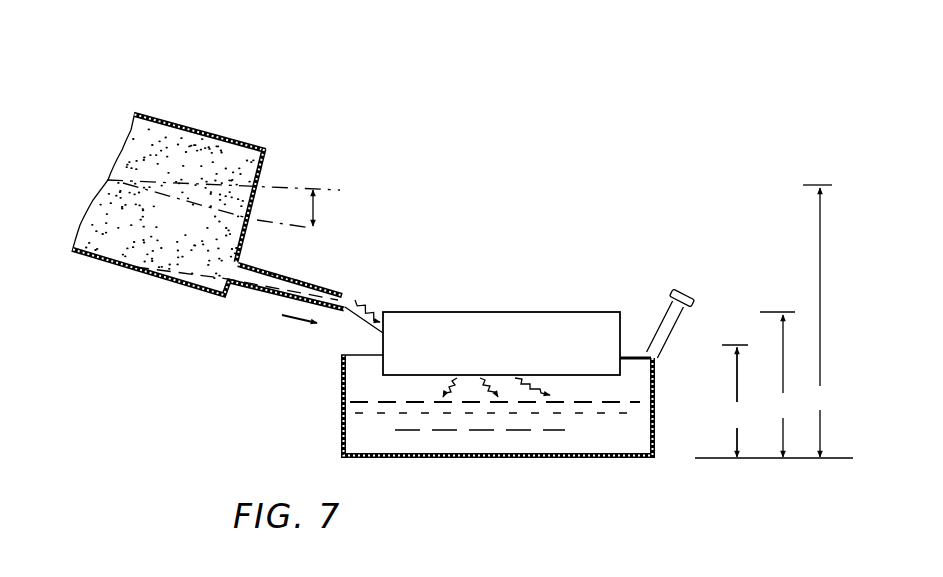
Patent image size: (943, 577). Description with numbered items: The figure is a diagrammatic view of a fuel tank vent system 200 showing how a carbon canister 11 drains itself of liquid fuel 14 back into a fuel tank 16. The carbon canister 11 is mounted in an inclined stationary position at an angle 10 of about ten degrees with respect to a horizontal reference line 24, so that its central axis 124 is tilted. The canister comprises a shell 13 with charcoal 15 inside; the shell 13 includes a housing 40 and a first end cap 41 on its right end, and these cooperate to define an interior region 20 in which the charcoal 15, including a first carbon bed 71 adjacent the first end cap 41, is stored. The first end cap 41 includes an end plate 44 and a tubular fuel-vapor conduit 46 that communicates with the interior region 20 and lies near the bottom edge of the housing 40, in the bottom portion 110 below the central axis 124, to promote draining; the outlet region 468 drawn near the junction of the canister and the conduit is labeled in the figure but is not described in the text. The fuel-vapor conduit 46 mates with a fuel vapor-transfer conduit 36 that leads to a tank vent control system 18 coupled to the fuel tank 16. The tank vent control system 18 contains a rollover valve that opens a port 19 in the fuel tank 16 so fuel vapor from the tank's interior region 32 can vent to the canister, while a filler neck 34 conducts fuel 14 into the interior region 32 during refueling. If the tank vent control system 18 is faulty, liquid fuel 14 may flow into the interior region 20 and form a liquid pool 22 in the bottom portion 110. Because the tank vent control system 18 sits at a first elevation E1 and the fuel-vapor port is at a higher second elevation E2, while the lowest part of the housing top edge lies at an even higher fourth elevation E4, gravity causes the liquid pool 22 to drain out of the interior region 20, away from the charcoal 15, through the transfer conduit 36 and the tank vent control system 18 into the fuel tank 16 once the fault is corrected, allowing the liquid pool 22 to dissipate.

The shell 13 is at (167, 108).
The housing 40 is at (197, 124).
The first carbon bed 71 is at (227, 163).
The interior region 20 is at (138, 156).
The end plate 44 is at (265, 158).
The horizontal reference line 24 is at (340, 187).
The angle 10 is at (316, 209).
The central axis 124 is at (100, 206).
The charcoal 15 is at (117, 230).
The outlet passage 468 is at (231, 270).
The carbon canister 11 is at (85, 263).
The bottom portion 110 is at (133, 282).
The liquid pool 22 is at (198, 283).
The first end cap 41 is at (232, 303).
The tubular fuel-vapor conduit 46 is at (253, 268).
The liquid fuel 14 is at (297, 283).
The fuel vapor-transfer conduit 36 is at (320, 285).
The interior region 32 is at (367, 393).
The tank vent control system 18 is at (531, 307).
The port 19 is at (618, 358).
The filler neck 34 is at (663, 320).
The fuel tank 16 is at (660, 413).
The fuel tank vent system 200 is at (472, 213).
The first elevation E1 is at (774, 401).
The second elevation E2 is at (777, 384).
The fourth elevation E4 is at (817, 321).